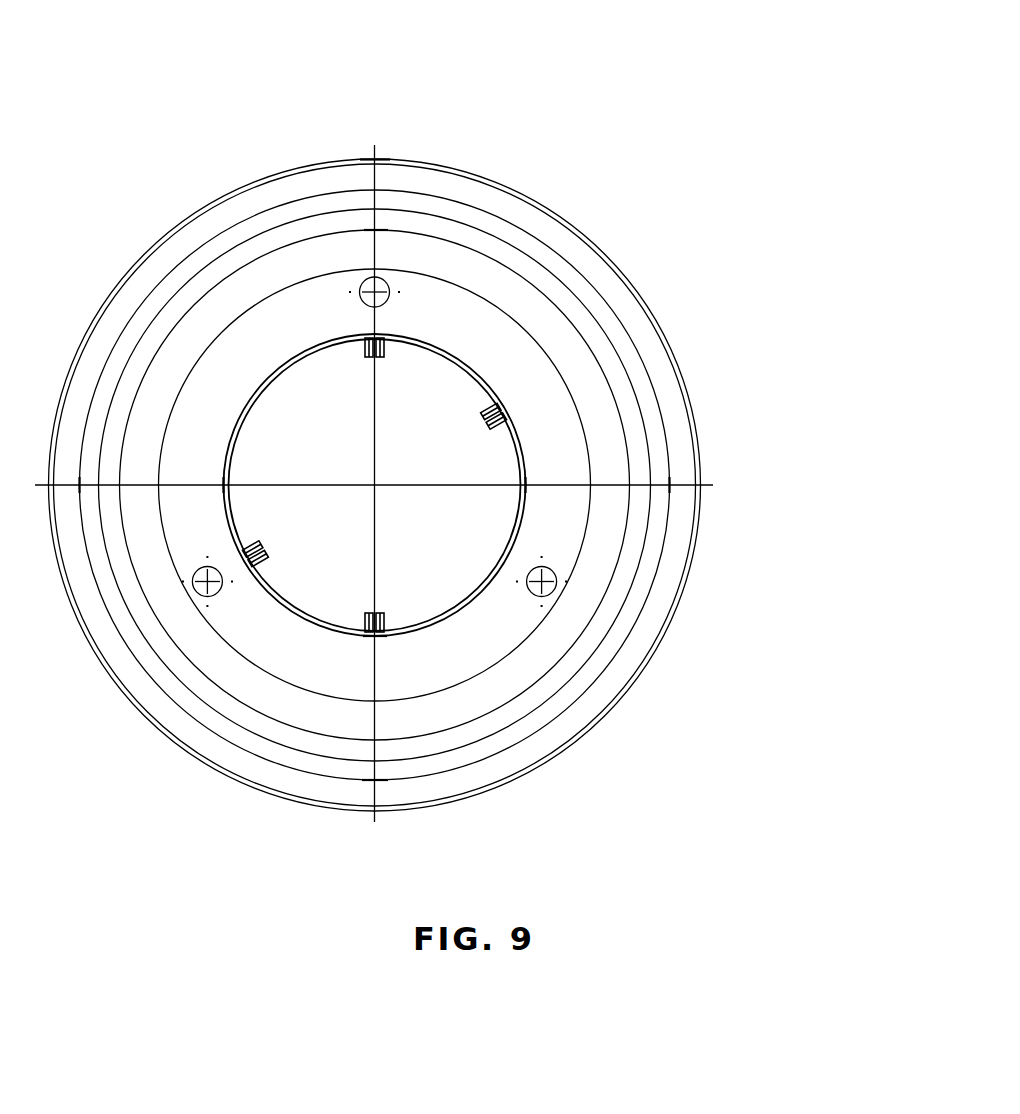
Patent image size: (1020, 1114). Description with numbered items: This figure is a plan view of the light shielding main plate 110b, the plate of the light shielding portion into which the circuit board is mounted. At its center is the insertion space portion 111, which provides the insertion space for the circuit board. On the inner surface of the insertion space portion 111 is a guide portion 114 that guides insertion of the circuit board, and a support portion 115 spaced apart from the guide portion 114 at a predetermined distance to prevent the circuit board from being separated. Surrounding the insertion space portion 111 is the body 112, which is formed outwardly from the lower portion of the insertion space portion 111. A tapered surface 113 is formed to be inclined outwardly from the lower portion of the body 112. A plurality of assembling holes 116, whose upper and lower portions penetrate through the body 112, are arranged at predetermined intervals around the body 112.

The light shielding main plate 110b is at (407, 34).
The insertion space portion 111 is at (522, 458).
The body 112 is at (490, 645).
The tapered surface 113 is at (517, 757).
The guide portion 114 is at (388, 348).
The support portion 115 is at (503, 418).
The assembling hole 116 is at (393, 277).